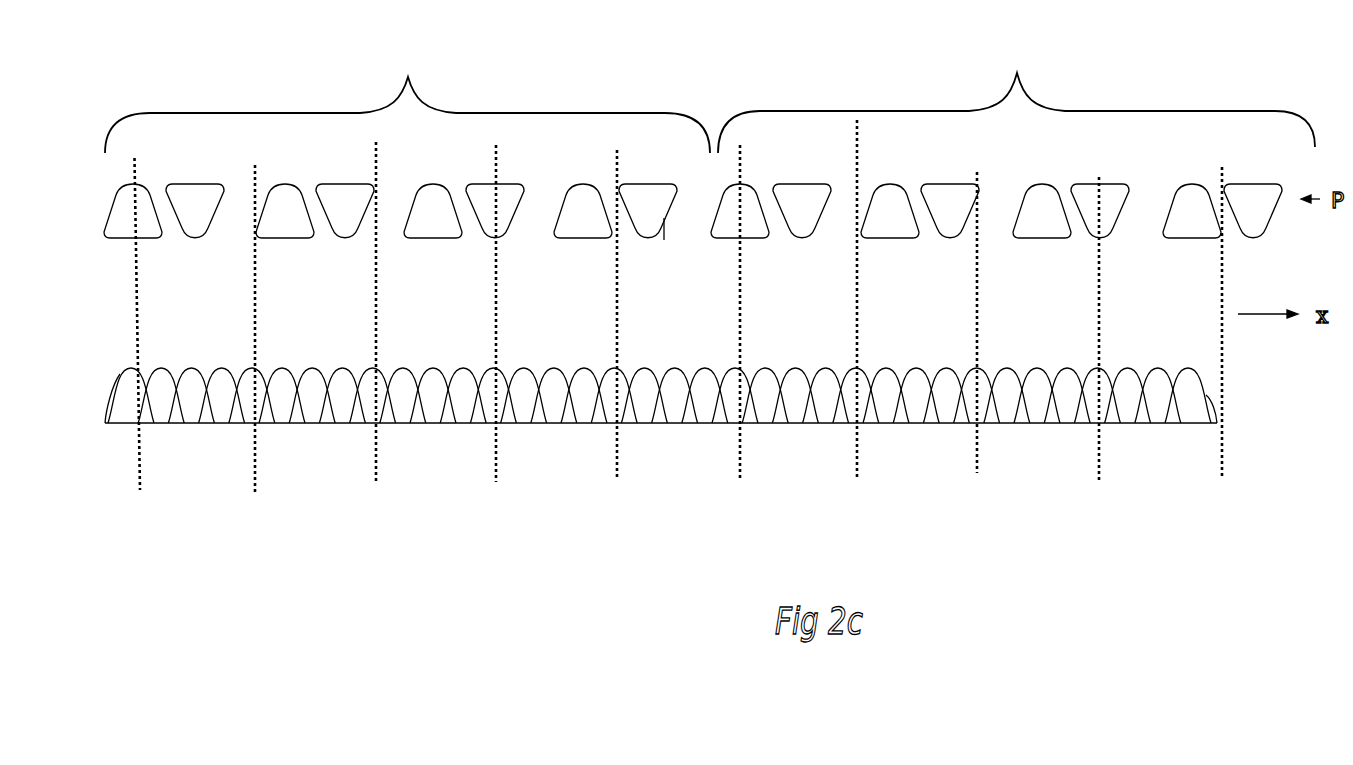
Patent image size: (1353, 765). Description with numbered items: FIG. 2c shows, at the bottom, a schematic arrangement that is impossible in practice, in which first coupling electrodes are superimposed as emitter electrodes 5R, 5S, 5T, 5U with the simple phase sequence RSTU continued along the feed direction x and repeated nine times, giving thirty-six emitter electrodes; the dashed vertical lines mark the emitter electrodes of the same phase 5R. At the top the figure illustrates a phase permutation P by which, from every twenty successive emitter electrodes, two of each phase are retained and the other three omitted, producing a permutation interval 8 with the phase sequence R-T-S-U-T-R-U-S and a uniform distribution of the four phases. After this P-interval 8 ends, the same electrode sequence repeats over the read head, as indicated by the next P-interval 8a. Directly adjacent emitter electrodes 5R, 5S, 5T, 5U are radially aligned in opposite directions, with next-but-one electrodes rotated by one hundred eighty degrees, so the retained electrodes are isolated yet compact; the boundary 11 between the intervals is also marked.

The emitter electrode of phase R 5R is at (634, 256).
The emitter electrode of phase S 5S is at (732, 291).
The emitter electrode of phase T 5T is at (634, 253).
The emitter electrode of phase U 5U is at (745, 293).
The permutation interval 8 is at (407, 101).
The next permutation interval 8a is at (1016, 97).
The boundary between pixel groups 11 is at (664, 240).